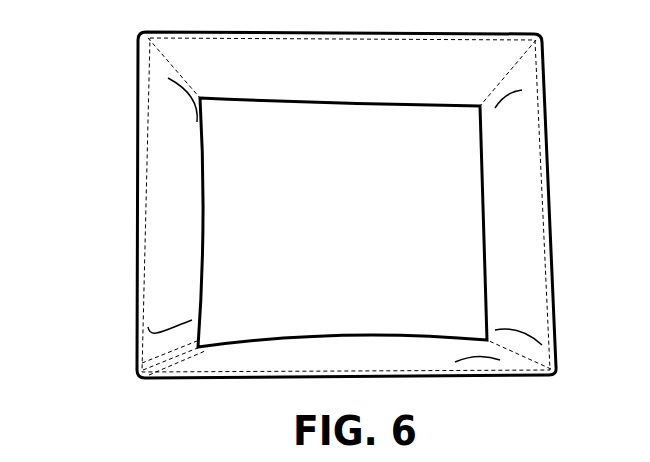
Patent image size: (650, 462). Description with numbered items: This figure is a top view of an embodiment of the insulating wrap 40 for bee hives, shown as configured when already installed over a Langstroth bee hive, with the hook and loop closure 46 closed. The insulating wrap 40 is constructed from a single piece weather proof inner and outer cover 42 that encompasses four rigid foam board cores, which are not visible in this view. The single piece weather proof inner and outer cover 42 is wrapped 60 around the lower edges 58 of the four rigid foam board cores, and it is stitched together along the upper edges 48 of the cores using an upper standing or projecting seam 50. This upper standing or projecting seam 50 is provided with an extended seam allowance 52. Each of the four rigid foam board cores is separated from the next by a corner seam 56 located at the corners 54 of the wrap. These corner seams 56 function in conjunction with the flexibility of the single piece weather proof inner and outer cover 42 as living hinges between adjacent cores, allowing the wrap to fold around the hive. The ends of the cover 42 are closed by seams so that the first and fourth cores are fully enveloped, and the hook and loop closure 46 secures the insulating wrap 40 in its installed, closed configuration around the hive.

The insulating wrap 40 is at (137, 107).
The single piece weather proof inner and outer cover 42 is at (137, 140).
The upper edges 48 is at (138, 177).
The upper standing or projecting seam 50 is at (137, 220).
The extended seam allowance 52 is at (137, 259).
The hook and loop closure 46 is at (135, 368).
The corners 54 is at (542, 43).
The corner seam 56 is at (522, 67).
The lower edges 58 is at (285, 106).
The wrapped 60 is at (347, 106).